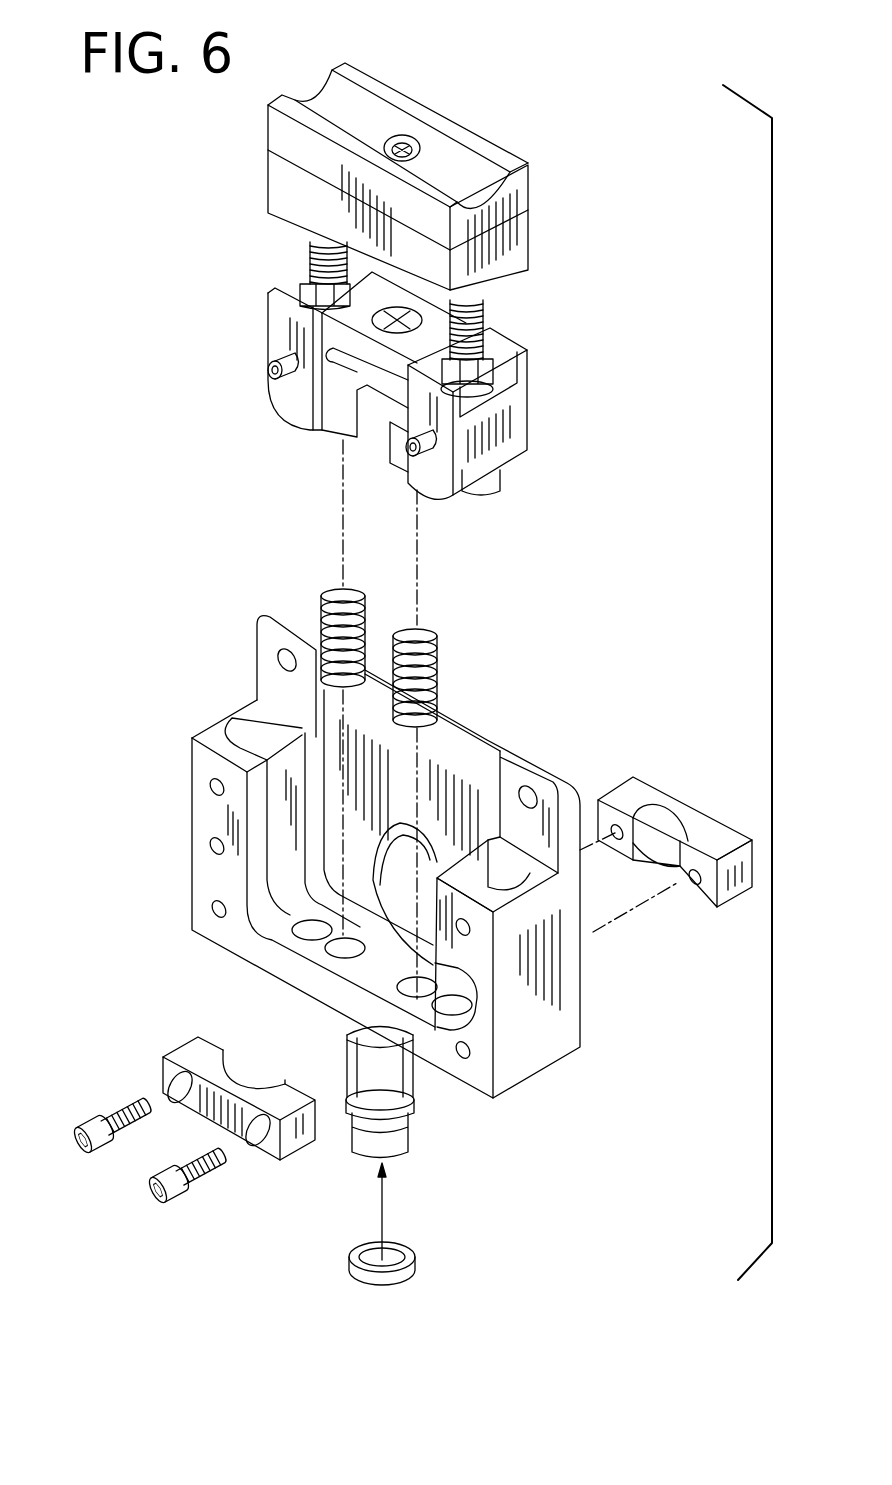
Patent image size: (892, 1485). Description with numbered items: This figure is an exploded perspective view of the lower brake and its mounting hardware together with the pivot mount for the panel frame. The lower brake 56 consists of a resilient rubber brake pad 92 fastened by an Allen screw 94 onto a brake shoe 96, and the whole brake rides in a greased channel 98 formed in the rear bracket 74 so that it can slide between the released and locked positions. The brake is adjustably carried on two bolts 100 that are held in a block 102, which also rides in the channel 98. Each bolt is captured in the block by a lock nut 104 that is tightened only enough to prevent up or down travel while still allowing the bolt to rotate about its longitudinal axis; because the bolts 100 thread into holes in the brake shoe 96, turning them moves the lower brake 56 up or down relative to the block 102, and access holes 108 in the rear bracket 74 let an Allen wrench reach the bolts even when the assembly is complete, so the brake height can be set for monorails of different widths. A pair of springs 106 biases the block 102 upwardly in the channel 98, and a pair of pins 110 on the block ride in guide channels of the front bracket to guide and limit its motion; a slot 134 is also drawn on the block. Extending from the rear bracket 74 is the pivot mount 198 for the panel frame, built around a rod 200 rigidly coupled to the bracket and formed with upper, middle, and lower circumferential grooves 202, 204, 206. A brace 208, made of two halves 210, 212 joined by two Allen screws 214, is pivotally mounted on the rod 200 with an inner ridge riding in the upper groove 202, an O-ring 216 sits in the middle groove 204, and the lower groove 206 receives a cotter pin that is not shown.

The lower brake 56 is at (268, 153).
The brake pad 92 is at (343, 100).
The Allen screw 94 is at (405, 145).
The brake shoe 96 is at (513, 253).
The bolts 100 is at (308, 258).
The lock nut 104 is at (303, 282).
The block 102 is at (282, 327).
The pins 110 is at (268, 377).
The slot 134 is at (355, 375).
The springs 106 is at (320, 608).
The rear bracket 74 is at (270, 690).
The channel 98 is at (462, 778).
The access holes 108 is at (308, 925).
The brace half 210 is at (644, 796).
The brace half 212 is at (190, 1047).
The Allen screws 214 is at (85, 1125).
The brace 208 is at (122, 1178).
The pivot mount 198 is at (257, 1237).
The rod 200 is at (408, 1070).
The upper mounting groove 202 is at (347, 1035).
The middle mounting groove 204 is at (352, 1100).
The lower mounting groove 206 is at (400, 1127).
The O-ring 216 is at (410, 1272).